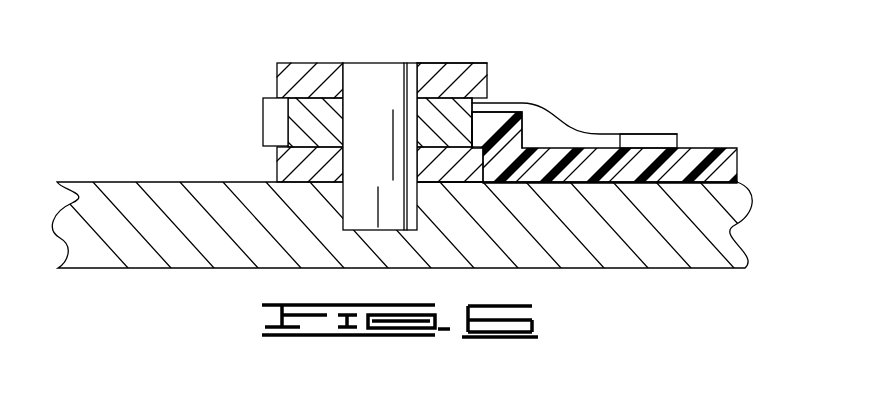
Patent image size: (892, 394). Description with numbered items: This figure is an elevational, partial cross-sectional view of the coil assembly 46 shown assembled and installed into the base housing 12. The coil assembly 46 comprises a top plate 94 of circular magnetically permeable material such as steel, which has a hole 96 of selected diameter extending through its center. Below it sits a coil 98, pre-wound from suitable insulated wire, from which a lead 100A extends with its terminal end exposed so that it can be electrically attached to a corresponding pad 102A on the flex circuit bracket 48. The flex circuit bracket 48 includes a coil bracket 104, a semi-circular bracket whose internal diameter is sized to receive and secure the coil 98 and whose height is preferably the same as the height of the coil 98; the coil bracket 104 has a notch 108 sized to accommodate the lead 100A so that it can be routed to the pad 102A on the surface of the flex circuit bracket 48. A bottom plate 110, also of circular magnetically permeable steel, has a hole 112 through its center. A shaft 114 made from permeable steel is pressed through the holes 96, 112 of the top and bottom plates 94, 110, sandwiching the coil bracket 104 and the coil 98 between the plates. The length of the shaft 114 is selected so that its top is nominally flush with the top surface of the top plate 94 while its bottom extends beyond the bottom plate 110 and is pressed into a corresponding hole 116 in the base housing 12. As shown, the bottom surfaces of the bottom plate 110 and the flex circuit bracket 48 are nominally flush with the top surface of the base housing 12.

The coil assembly 46 is at (440, 166).
The base housing 12 is at (138, 245).
The flex circuit bracket 48 is at (740, 147).
The top plate 94 is at (487, 63).
The hole 96 is at (403, 90).
The coil 98 is at (292, 134).
The lead 100A is at (540, 108).
The pad 102A is at (677, 135).
The coil bracket 104 is at (270, 116).
The notch 108 is at (507, 105).
The bottom plate 110 is at (296, 168).
The hole 112 is at (440, 185).
The shaft 114 is at (377, 77).
The hole 116 is at (342, 212).